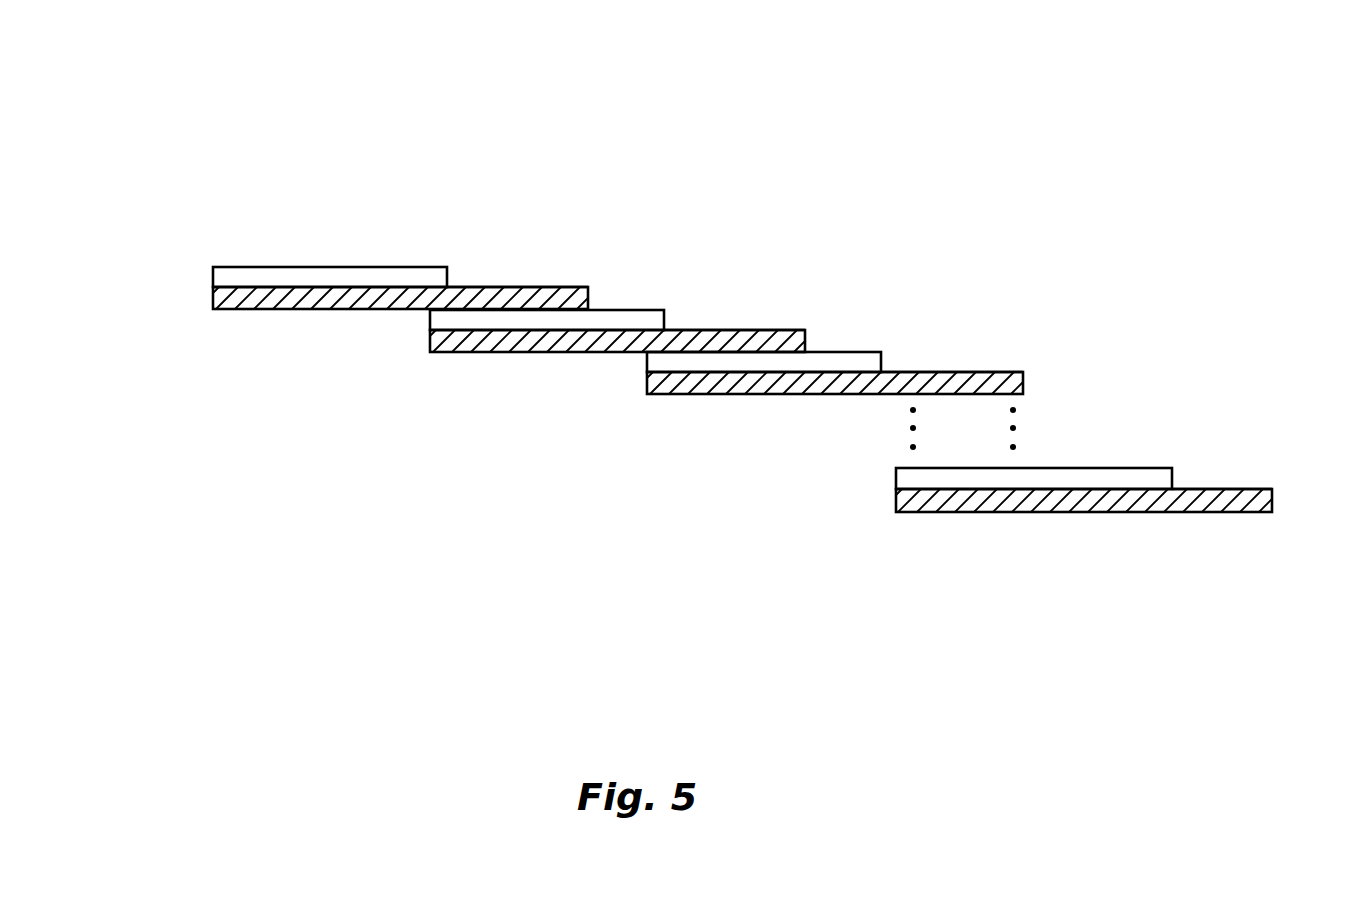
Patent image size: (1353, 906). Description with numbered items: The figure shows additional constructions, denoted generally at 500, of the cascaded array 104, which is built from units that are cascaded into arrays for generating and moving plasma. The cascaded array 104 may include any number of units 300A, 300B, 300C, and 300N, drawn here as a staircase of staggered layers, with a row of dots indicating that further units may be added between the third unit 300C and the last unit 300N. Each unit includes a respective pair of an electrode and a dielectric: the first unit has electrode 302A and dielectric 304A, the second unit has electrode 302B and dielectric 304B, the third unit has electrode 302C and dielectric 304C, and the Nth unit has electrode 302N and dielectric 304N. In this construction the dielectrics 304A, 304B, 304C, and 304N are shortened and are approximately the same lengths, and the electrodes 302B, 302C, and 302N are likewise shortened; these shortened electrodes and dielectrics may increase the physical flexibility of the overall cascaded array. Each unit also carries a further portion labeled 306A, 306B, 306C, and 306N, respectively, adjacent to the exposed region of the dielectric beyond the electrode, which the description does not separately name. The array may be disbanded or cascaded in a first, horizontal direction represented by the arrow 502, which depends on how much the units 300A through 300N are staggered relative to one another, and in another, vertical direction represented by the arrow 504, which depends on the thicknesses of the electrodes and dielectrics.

The cascaded array 104 is at (118, 257).
The unit 300A is at (198, 273).
The unit 300B is at (198, 318).
The unit 300C is at (198, 360).
The unit 300N is at (198, 488).
The electrode 302A is at (317, 267).
The electrode 302B is at (665, 308).
The electrode 302C is at (882, 352).
The electrode 302N is at (1083, 453).
The dielectric 304A is at (577, 287).
The dielectric 304B is at (807, 330).
The dielectric 304C is at (1023, 370).
The dielectric 304N is at (1193, 512).
The exposed portion of first module 306A is at (502, 267).
The exposed portion of second module 306B is at (765, 310).
The exposed portion of third module 306C is at (976, 358).
The exposed portion of Nth module 306N is at (1214, 480).
The additional constructions 500 is at (899, 80).
The arrow 502 is at (607, 592).
The arrow 504 is at (1284, 92).